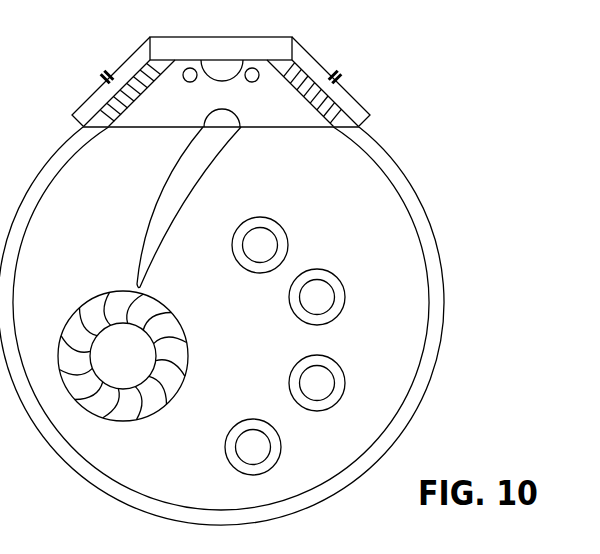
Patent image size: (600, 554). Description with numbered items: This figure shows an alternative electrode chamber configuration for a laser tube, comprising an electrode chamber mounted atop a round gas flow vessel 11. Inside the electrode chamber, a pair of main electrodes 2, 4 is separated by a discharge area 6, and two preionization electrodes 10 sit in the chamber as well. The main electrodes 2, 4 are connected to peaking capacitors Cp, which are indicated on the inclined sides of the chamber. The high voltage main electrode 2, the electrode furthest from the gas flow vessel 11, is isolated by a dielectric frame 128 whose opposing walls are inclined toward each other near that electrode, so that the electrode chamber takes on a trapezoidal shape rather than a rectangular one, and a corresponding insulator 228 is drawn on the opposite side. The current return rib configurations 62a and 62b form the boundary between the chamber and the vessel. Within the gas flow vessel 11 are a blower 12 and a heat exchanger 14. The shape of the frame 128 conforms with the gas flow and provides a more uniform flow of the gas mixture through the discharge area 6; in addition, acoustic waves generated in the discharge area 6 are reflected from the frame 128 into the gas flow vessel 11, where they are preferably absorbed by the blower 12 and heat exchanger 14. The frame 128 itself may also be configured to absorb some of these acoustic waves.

The high voltage main electrode 2 is at (224, 68).
The main electrode 4 is at (222, 120).
The discharge area 6 is at (228, 107).
The preionization electrodes 10 is at (190, 68).
The gas flow vessel 11 is at (410, 235).
The blower 12 is at (112, 366).
The heat exchanger 14 is at (336, 307).
The current return rib configuration 62a is at (156, 128).
The current return rib configuration 62b is at (264, 128).
The dielectric frame 128 is at (107, 107).
The right heat-generating element 228 is at (330, 107).
The peaking capacitors Cp is at (220, 59).